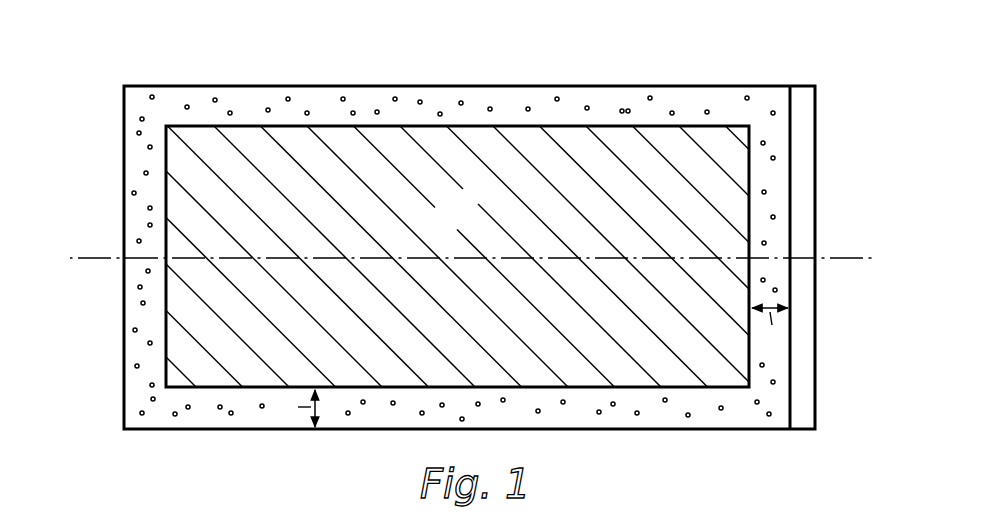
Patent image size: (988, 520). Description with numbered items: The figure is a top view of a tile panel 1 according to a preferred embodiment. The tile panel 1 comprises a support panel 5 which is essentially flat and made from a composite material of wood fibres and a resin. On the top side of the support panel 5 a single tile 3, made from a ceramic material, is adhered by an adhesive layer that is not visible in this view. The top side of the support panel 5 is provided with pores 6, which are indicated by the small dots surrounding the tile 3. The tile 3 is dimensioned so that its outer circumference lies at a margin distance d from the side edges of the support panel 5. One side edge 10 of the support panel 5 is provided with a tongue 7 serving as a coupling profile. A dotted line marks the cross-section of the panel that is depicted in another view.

The tile panel 1 is at (90, 76).
The tile 3 is at (467, 220).
The support panel 5 is at (512, 110).
The pores 6 is at (630, 103).
The tongue 7 is at (816, 177).
The side edge 10 is at (826, 93).